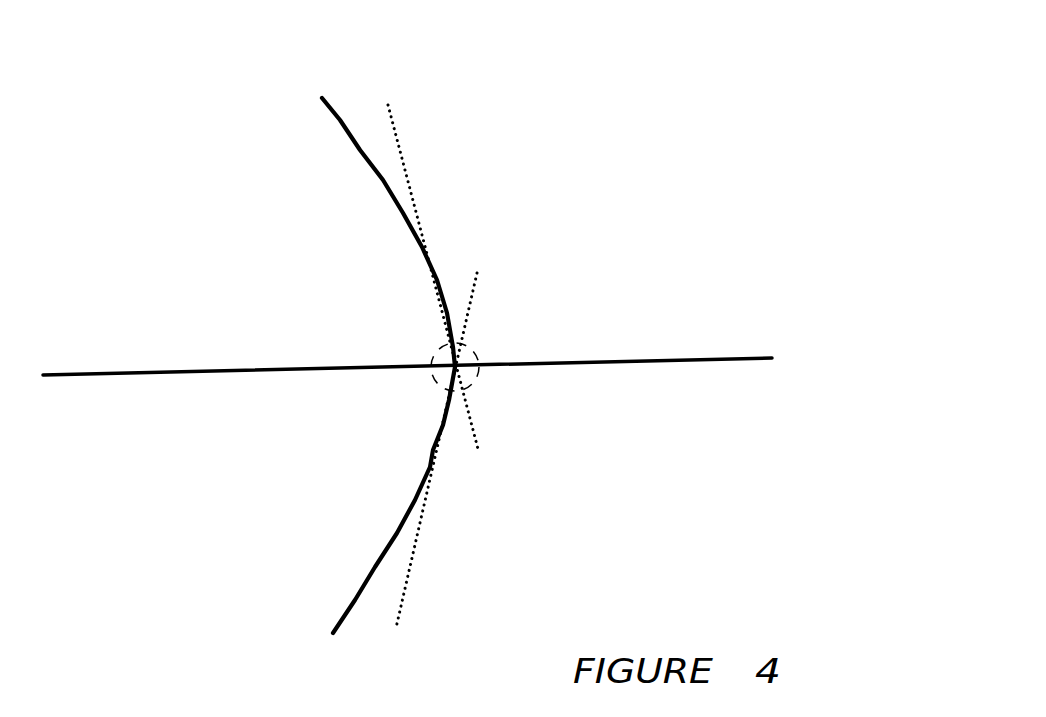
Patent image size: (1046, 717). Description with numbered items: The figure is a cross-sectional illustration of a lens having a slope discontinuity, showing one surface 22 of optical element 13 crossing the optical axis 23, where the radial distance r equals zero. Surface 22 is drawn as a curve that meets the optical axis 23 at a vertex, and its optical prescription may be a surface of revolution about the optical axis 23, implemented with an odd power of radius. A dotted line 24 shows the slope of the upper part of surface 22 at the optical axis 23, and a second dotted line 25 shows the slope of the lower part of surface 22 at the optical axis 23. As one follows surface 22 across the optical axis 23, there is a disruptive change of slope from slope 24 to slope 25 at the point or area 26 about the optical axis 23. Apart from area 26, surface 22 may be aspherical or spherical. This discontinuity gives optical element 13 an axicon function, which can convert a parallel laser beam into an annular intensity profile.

The optical element 13 is at (347, 328).
The surface 22 is at (340, 120).
The optical axis 23 is at (613, 362).
The line 24 is at (398, 135).
The line 25 is at (407, 583).
The area 26 is at (482, 357).